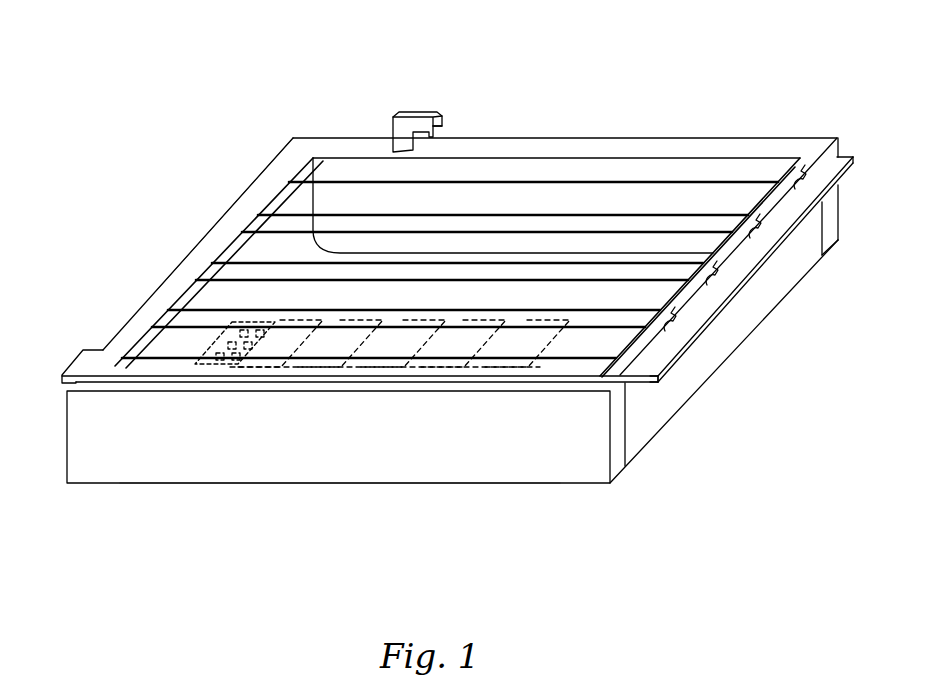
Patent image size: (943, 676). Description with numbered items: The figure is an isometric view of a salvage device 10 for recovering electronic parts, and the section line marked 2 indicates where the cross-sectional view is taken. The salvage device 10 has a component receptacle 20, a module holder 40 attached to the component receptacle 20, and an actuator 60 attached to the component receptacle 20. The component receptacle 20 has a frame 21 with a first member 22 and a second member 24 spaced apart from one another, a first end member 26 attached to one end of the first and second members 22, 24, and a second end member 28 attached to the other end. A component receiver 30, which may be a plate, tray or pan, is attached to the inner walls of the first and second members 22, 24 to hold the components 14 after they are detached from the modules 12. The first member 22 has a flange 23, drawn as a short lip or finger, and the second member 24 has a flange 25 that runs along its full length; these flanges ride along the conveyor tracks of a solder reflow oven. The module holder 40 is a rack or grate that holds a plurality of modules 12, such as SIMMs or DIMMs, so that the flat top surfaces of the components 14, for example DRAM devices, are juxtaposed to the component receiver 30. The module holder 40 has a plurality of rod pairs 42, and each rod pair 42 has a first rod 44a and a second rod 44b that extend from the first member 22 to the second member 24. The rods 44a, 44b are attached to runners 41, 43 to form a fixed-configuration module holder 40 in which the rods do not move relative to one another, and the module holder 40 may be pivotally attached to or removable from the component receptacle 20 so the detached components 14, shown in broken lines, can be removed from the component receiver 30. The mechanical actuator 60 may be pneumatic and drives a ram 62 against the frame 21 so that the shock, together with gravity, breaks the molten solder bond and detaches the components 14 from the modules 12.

The salvage device 10 is at (548, 60).
The module 12 is at (190, 367).
The component 14 is at (245, 330).
The component receptacle 20 is at (645, 476).
The frame 21 is at (271, 158).
The first member 22 is at (207, 255).
The flange 23 is at (61, 381).
The second member 24 is at (718, 350).
The flange 25 is at (660, 381).
The first end member 26 is at (521, 479).
The second end member 28 is at (534, 142).
The component receiver 30 is at (440, 304).
The module holder 40 is at (642, 170).
The runner 41 is at (316, 166).
The rod pair 42 is at (773, 200).
The runner 43 is at (795, 167).
The first rod 44a is at (282, 215).
The second rod 44b is at (291, 182).
The actuator 60 is at (397, 130).
The ram 62 is at (443, 129).
The section line 2- 2 is at (207, 291).